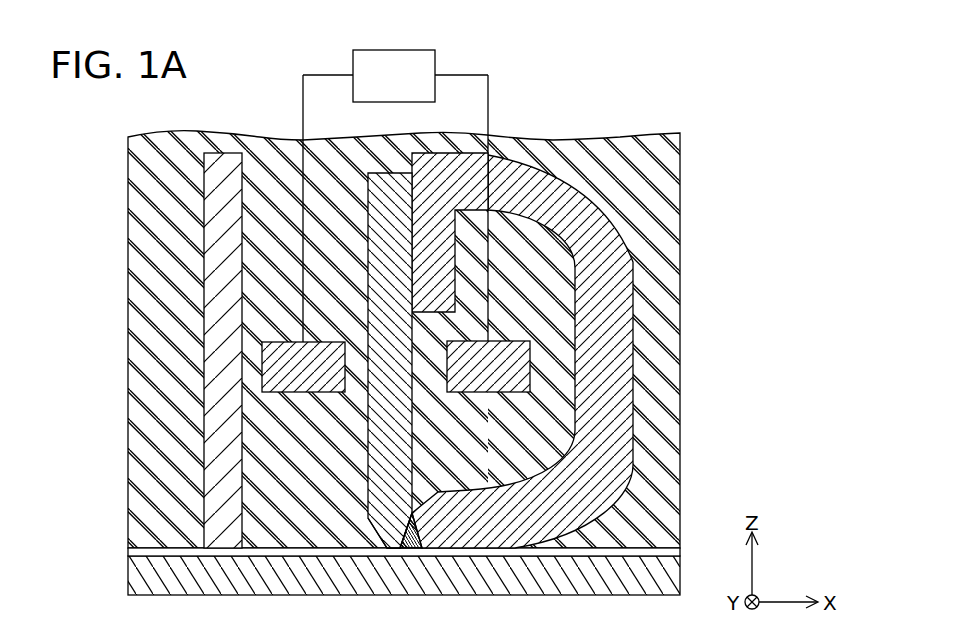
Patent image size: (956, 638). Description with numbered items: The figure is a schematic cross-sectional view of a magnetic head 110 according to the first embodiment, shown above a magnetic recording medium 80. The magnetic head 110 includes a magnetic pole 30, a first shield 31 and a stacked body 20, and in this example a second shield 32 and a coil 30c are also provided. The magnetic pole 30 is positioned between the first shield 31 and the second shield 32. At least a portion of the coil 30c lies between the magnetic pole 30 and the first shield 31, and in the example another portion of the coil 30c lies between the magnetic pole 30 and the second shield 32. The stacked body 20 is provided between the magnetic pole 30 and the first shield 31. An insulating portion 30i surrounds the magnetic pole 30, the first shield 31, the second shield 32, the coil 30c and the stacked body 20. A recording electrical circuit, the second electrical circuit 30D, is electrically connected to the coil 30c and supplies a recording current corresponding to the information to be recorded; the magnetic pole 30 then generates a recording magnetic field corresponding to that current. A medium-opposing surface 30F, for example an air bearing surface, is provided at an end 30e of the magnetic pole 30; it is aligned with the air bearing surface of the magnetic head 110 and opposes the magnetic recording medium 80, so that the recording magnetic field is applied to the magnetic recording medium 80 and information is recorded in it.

The magnetic head 110 is at (688, 104).
The magnetic recording medium 80 is at (150, 577).
The stacked body 20 is at (445, 556).
The magnetic pole 30 is at (352, 137).
The second electrical circuit 30D is at (403, 50).
The insulating portion 30i is at (275, 299).
The coil 30c is at (262, 365).
The end 30e is at (384, 546).
The medium-opposing surface 30F is at (421, 545).
The first shield 31 is at (630, 447).
The second shield 32 is at (212, 463).